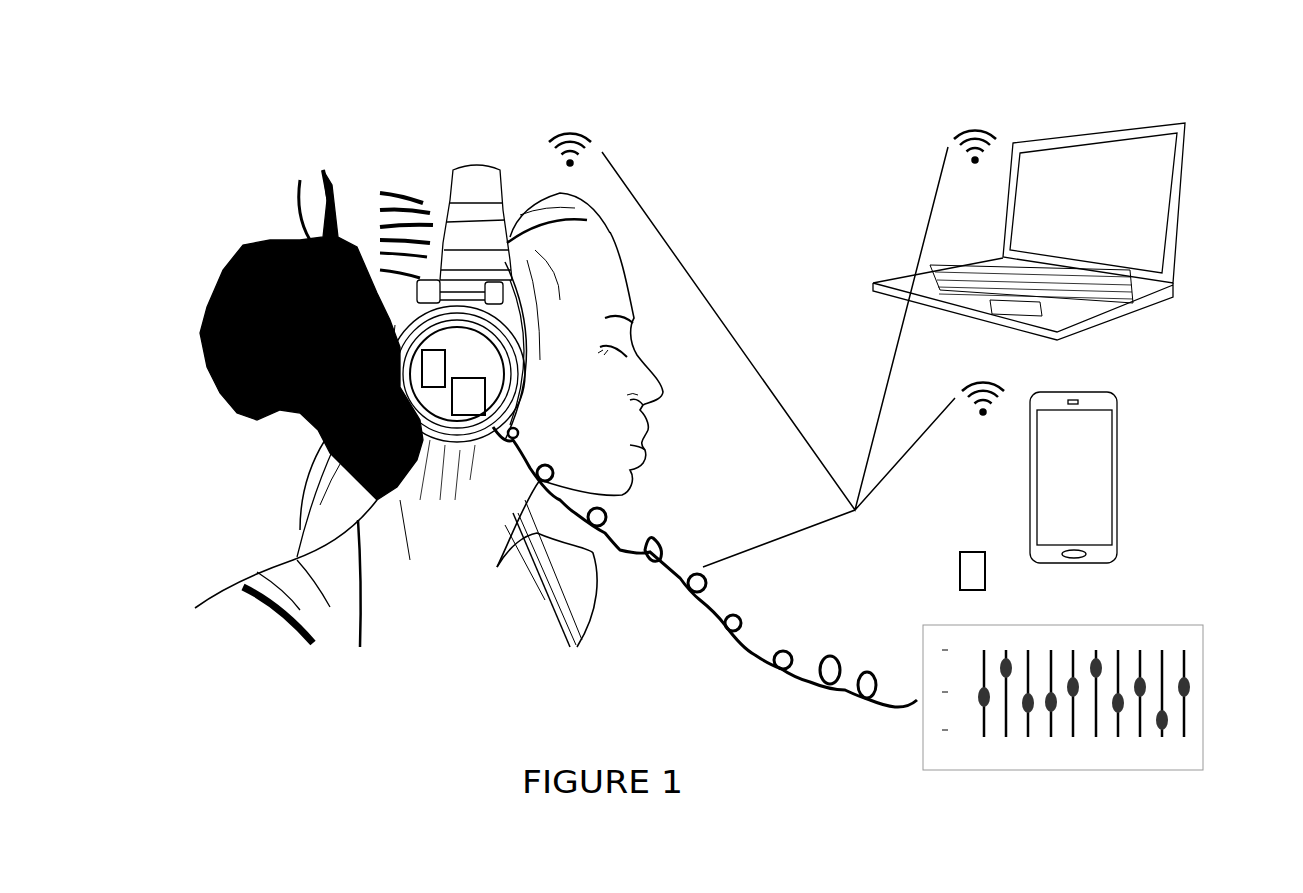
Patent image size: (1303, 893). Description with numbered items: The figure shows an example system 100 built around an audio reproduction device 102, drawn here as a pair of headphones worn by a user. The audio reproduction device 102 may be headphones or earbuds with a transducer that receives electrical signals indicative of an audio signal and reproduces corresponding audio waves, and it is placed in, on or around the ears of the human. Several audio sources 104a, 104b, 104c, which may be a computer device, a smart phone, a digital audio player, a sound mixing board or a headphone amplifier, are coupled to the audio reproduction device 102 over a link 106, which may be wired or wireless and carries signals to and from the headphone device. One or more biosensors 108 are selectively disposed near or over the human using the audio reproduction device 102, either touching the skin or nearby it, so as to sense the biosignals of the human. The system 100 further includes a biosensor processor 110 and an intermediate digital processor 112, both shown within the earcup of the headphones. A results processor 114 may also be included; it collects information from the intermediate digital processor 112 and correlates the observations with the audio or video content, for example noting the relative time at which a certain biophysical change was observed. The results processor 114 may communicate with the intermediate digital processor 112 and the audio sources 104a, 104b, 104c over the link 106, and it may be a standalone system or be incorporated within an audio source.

The system 100 is at (740, 148).
The audio reproduction device 102 is at (473, 185).
The audio source 104a is at (1157, 209).
The audio source 104b is at (1100, 472).
The audio source 104c is at (1175, 603).
The link 106 is at (895, 467).
The biosensor 108 is at (523, 337).
The biosensor processor 110 is at (433, 368).
The intermediate digital processor 112 is at (463, 395).
The results processor 114 is at (968, 563).